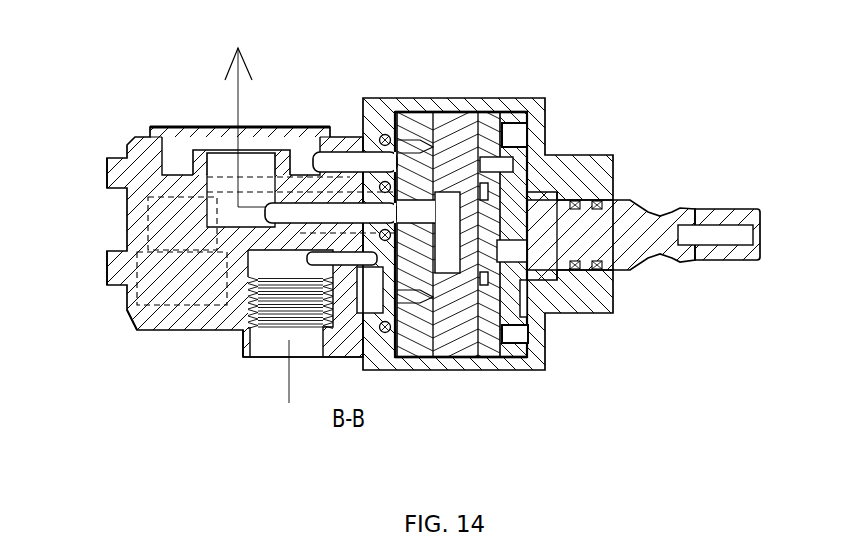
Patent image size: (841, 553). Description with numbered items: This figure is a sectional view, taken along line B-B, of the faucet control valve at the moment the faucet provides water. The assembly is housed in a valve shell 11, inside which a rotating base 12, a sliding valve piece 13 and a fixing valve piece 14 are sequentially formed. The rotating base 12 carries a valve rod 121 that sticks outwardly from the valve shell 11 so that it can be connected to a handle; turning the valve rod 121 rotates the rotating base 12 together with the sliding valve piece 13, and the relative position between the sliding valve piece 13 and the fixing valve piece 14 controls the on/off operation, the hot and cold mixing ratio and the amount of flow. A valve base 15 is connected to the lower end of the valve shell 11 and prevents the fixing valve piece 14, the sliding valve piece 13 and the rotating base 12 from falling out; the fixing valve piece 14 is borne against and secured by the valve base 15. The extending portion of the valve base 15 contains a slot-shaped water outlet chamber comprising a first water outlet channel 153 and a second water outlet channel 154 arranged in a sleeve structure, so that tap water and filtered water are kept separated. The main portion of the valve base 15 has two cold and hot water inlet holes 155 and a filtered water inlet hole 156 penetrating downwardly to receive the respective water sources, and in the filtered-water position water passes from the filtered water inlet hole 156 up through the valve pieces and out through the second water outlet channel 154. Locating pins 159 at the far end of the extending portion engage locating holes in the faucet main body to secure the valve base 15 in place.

The valve shell 11 is at (527, 104).
The rotating base 12 is at (548, 336).
The valve rod 121 is at (738, 214).
The sliding valve piece 13 is at (440, 114).
The fixing valve piece 14 is at (407, 362).
The valve base 15 is at (127, 143).
The first water outlet channel 153 is at (295, 134).
The second water outlet channel 154 is at (225, 150).
The cold and hot water inlet holes 155 is at (125, 311).
The filtered water inlet hole 156 is at (243, 346).
The locating pins 159 is at (106, 177).